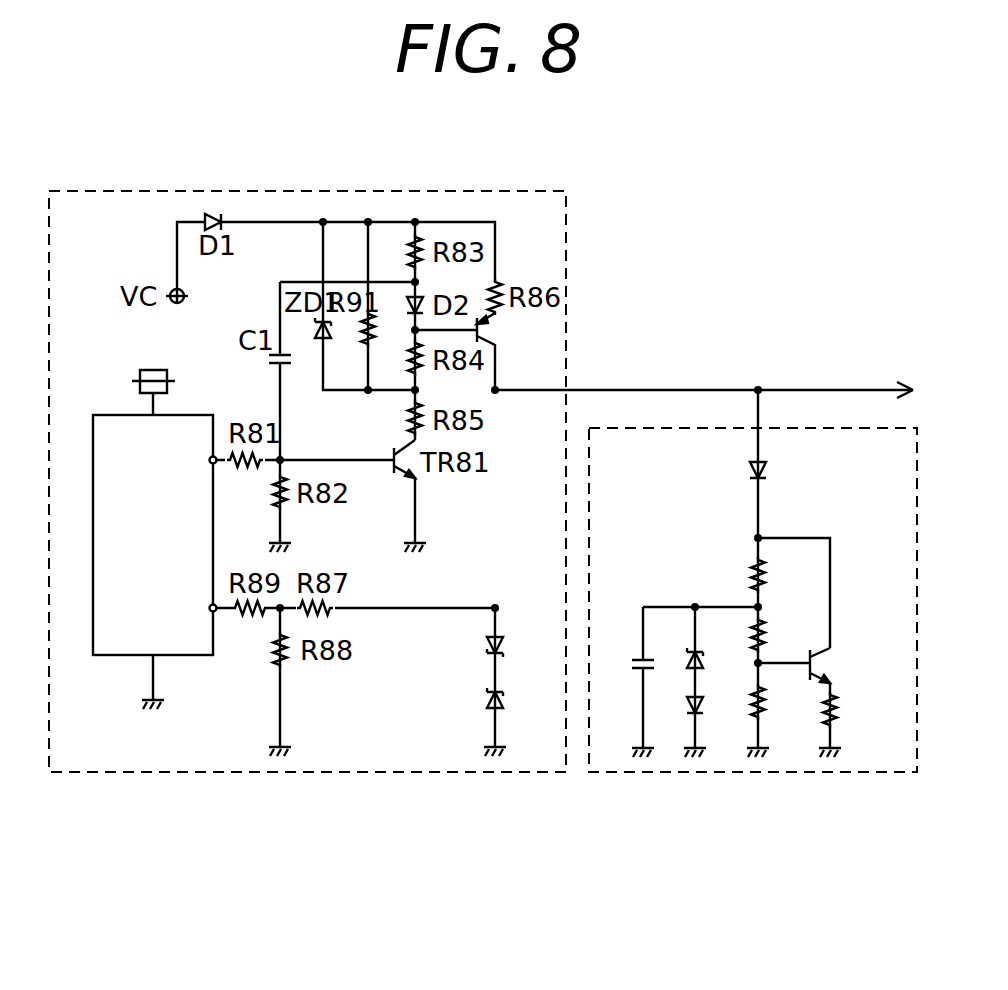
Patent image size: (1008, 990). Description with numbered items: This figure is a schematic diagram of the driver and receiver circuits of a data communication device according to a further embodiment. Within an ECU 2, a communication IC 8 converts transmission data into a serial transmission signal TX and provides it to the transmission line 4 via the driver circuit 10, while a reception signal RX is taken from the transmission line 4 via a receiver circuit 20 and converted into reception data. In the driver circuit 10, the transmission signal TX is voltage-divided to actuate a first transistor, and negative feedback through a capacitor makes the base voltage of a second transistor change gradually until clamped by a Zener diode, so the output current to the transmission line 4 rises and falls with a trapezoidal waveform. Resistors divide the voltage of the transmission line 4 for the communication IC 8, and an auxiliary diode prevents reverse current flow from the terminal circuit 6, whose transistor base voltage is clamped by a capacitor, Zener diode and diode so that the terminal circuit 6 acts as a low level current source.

The ECU 2 is at (478, 191).
The transmission line 4 is at (849, 390).
The terminal circuit 6 is at (828, 773).
The communication IC 8 is at (93, 433).
The driver circuit 10 is at (535, 322).
The receiver circuit 20 is at (445, 728).